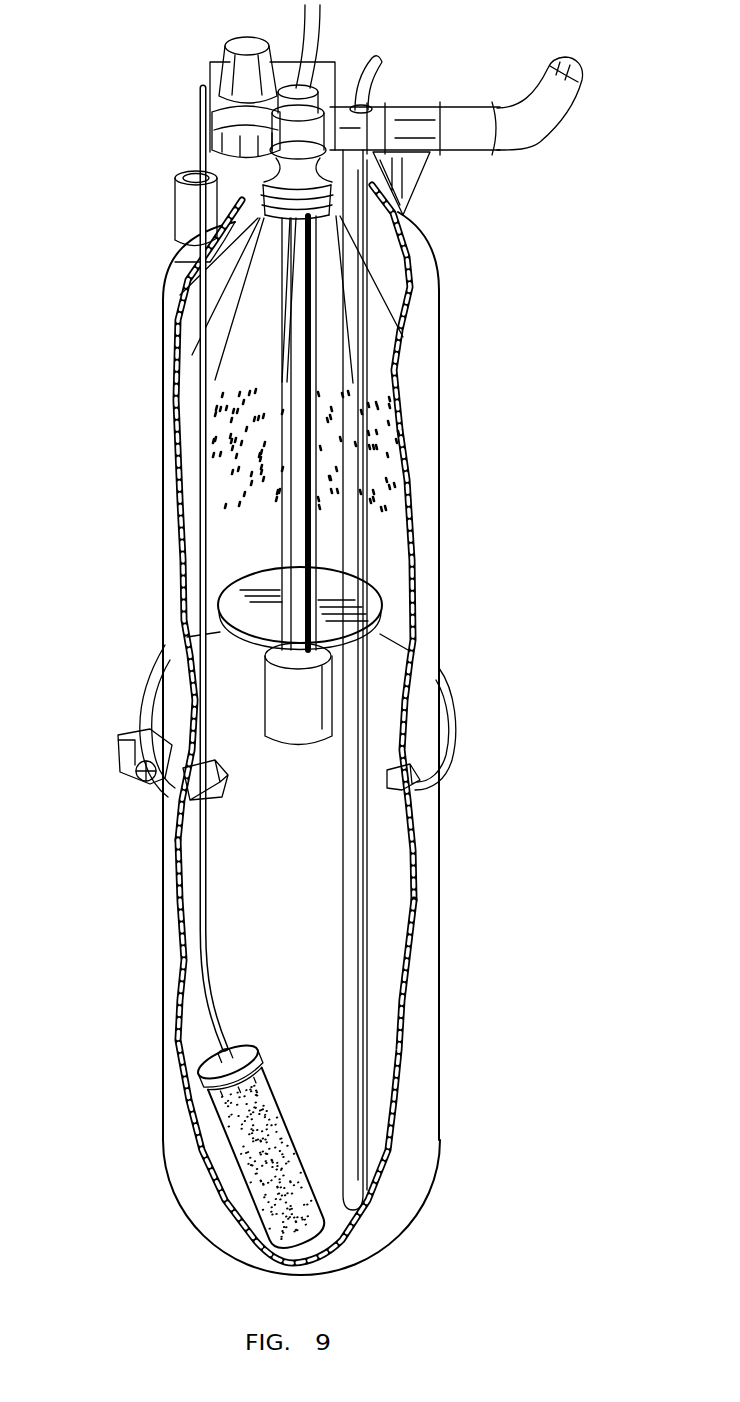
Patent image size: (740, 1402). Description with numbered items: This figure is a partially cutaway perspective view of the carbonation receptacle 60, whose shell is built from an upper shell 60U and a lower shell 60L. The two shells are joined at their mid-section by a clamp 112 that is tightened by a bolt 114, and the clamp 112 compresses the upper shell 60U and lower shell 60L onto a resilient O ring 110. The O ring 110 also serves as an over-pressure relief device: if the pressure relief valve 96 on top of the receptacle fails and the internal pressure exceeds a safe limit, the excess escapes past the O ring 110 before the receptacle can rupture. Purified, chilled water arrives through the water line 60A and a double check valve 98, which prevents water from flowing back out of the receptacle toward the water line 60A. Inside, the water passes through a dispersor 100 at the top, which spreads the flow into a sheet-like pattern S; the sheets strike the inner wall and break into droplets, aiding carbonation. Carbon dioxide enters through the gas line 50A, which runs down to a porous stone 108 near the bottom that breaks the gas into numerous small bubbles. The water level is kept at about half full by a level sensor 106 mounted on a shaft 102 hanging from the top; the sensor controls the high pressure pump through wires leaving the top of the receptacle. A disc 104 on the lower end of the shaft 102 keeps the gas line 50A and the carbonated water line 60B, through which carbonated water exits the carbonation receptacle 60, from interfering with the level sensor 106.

The carbonation receptacle 60 is at (462, 433).
The upper shell 60U is at (427, 563).
The lower shell 60L is at (418, 995).
The water line 60A is at (568, 117).
The carbonated water line 60B is at (380, 68).
The gas line 50A is at (203, 125).
The pressure relief valve 96 is at (235, 48).
The double check valve 98 is at (430, 128).
The dispersor 100 is at (205, 263).
The sheet-like pattern S is at (292, 342).
The shaft 102 is at (290, 447).
The disc 104 is at (248, 622).
The level sensor 106 is at (300, 713).
The porous stone 108 is at (265, 1122).
The O ring 110 is at (213, 787).
The clamp 112 is at (175, 765).
The bolt 114 is at (143, 774).